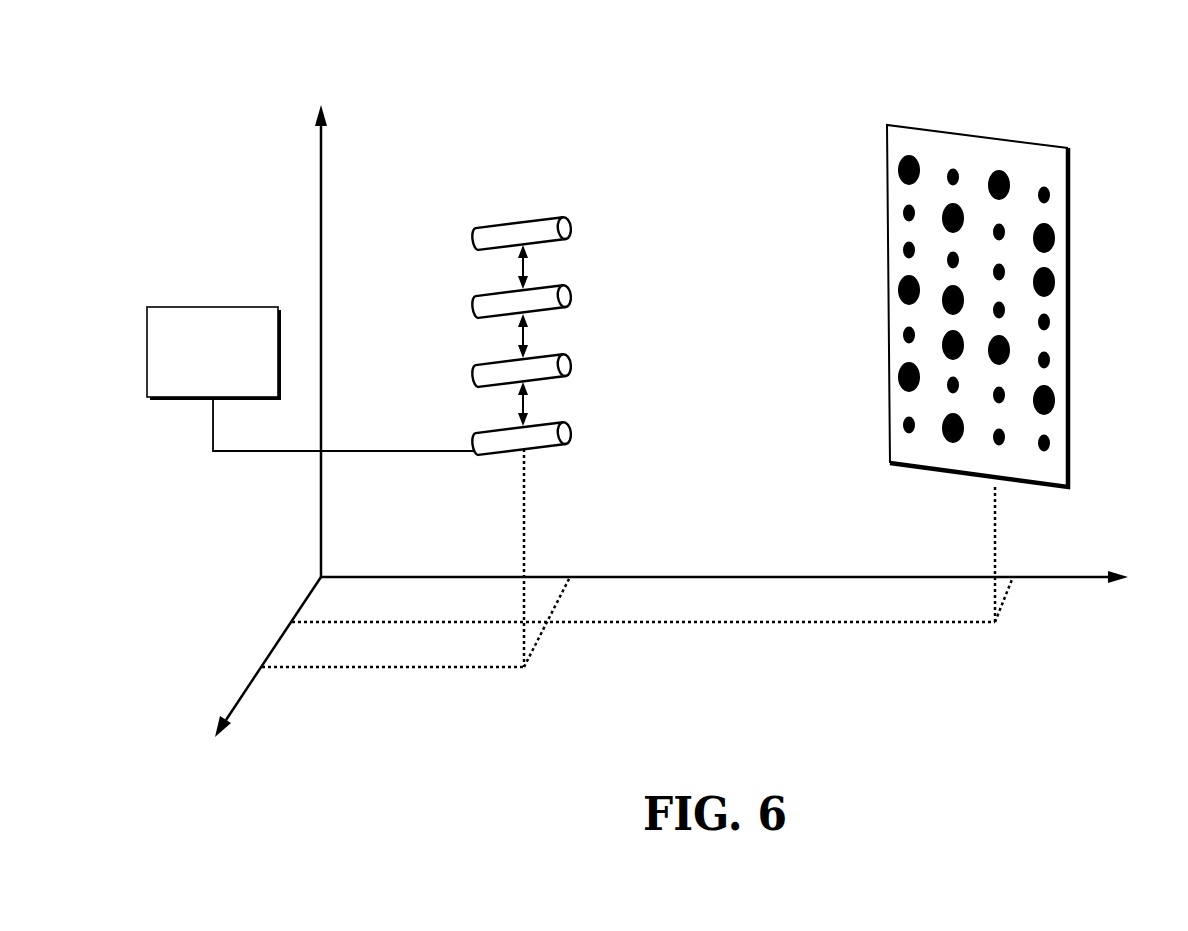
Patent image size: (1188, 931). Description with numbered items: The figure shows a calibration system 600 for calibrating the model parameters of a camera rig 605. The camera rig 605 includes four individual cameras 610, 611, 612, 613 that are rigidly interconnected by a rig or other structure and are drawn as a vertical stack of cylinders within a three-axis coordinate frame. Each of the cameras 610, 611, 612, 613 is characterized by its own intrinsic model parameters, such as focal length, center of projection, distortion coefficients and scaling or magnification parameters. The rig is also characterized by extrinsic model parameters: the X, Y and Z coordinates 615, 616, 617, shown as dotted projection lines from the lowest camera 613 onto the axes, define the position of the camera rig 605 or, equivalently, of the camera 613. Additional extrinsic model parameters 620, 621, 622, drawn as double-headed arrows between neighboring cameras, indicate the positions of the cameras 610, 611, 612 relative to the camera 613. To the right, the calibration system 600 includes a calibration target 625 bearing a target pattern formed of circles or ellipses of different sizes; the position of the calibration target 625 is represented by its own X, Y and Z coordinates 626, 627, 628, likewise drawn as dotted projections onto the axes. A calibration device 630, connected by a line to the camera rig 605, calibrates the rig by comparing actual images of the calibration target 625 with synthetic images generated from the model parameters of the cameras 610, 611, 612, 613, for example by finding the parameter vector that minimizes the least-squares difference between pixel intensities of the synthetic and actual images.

The calibration system 600 is at (1093, 111).
The camera rig 605 is at (513, 184).
The camera 610 is at (572, 227).
The camera 611 is at (572, 296).
The camera 612 is at (572, 366).
The camera 613 is at (572, 434).
The X coordinate 615 is at (325, 669).
The Y coordinate 616 is at (541, 643).
The Z coordinate 617 is at (526, 530).
The extrinsic model parameter 620 is at (520, 264).
The extrinsic model parameter 621 is at (520, 333).
The extrinsic model parameter 622 is at (520, 402).
The calibration target 625 is at (1071, 292).
The X coordinate 626 is at (962, 624).
The Y coordinate 627 is at (1012, 595).
The Z coordinate 628 is at (993, 550).
The calibration device 630 is at (311, 379).